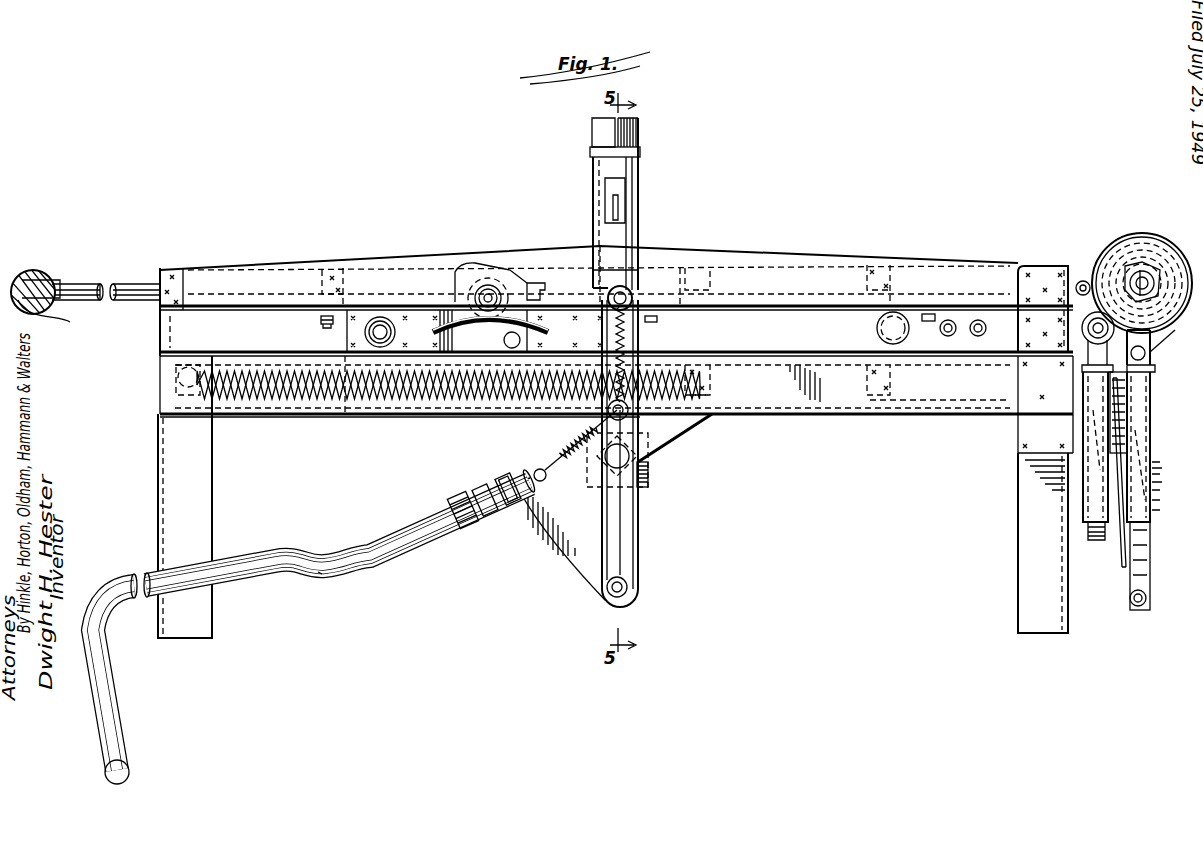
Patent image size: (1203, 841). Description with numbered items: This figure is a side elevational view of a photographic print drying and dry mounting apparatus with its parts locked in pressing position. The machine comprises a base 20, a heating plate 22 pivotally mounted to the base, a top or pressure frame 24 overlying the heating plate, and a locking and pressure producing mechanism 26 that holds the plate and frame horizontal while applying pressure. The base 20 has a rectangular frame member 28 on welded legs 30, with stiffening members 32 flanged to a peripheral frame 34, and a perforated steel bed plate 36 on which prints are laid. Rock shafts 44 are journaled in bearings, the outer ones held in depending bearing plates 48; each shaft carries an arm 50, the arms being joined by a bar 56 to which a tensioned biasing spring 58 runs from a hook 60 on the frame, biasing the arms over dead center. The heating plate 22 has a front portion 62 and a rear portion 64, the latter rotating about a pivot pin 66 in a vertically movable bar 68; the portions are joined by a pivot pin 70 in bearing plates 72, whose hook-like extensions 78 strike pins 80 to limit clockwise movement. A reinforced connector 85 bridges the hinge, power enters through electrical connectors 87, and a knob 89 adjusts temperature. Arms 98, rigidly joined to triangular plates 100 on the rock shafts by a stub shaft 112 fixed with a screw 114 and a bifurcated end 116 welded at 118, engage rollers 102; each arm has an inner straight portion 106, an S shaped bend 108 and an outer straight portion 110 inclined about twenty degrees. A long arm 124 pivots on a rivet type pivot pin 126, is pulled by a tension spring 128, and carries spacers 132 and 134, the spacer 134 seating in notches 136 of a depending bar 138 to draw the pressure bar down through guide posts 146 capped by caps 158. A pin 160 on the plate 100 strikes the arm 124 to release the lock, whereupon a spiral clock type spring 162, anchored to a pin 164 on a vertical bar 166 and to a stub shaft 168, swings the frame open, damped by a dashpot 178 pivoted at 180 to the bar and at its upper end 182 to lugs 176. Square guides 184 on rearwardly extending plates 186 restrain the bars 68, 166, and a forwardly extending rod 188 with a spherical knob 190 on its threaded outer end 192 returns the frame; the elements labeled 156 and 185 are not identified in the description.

The base 20 is at (224, 504).
The heating plate 22 is at (153, 355).
The top or pressure frame 24 is at (856, 249).
The locking and pressure producing mechanism 26 is at (648, 515).
The rectangular frame member 28 is at (820, 413).
The legs 30 is at (1045, 626).
The stiffening members 32 is at (870, 380).
The peripheral frame 34 is at (258, 418).
The perforated steel bed plate 36 is at (962, 362).
The rock shafts 44 is at (649, 453).
The depending bearing plate 48 is at (650, 470).
The arm 50 is at (672, 432).
The rod or bar 56 is at (712, 400).
The tensioned biasing spring 58 is at (445, 405).
The hook 60 is at (178, 390).
The front portion of heating plate 62 is at (222, 331).
The rear portion of heating plate 64 is at (770, 323).
The pivot pin 66 is at (1148, 353).
The vertically movable bar 68 is at (1097, 542).
The pivot pin 70 is at (488, 296).
The bearing plates 72 is at (458, 300).
The hook-like extensions 78 is at (535, 285).
The pins 80 is at (517, 347).
The connector 85 is at (478, 328).
The electrical connectors 87 is at (978, 320).
The knob 89 is at (877, 328).
The arms 98 is at (286, 562).
The triangularly shaped plates 100 is at (550, 540).
The rollers 102 is at (382, 317).
The inner short straight portion 106 is at (365, 338).
The S shaped bend 108 is at (320, 576).
The outer straight portion 110 is at (143, 582).
The stub shaft 112 is at (487, 523).
The screw 114 is at (457, 492).
The bifurcated end 116 is at (505, 482).
The weld 118 is at (517, 510).
The long bar or arm 124 is at (626, 545).
The rivet type pivot pin 126 is at (630, 587).
The tension spring 128 is at (560, 440).
The spacer 132 is at (626, 404).
The spacer 134 is at (632, 293).
The notches 136 is at (628, 330).
The depending bar or arm 138 is at (615, 265).
The guide posts 146 is at (649, 181).
The plate 156 is at (708, 263).
The caps 158 is at (640, 152).
The pin 160 is at (1179, 243).
The spiral clock type spring 162 is at (1150, 268).
The pin 164 is at (1152, 380).
The vertical bar 166 is at (1152, 580).
The stub shaft 168 is at (1135, 292).
The lugs or ears 176 is at (1092, 314).
The dashpot 178 is at (1124, 535).
The lower pivot connection 180 is at (1138, 607).
The upper end of dashpot 182 is at (1078, 284).
The square guides 184 is at (1140, 478).
The plate 185 is at (1020, 425).
The rearwardly extending plates 186 is at (1120, 395).
The forwardly extending rod 188 is at (122, 284).
The spherical knob 190 is at (50, 284).
The threaded outer end 192 is at (40, 300).